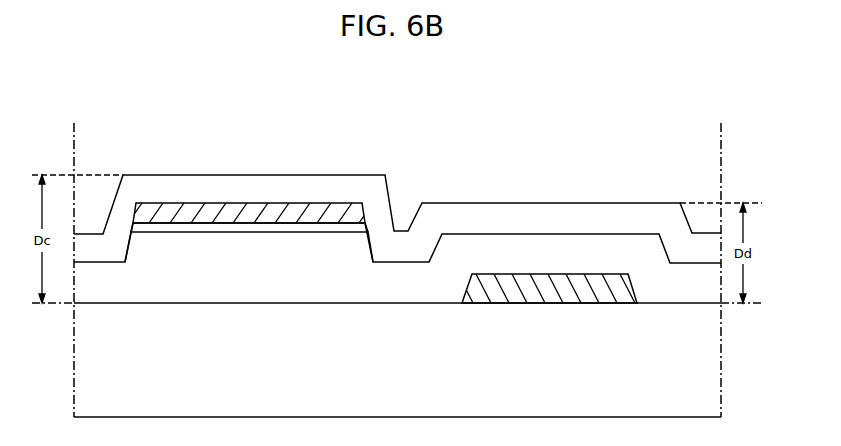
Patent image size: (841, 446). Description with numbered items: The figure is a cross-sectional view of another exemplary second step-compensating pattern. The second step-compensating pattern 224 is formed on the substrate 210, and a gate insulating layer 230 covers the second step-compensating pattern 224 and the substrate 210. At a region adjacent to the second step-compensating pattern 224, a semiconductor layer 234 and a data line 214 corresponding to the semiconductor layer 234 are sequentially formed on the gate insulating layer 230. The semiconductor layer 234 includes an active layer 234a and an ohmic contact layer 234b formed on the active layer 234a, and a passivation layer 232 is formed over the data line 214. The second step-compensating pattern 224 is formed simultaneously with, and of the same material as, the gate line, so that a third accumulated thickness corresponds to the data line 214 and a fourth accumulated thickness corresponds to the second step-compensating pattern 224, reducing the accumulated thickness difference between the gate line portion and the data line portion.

The substrate 210 is at (405, 397).
The data line 214 is at (208, 210).
The second step-compensating pattern 224 is at (557, 293).
The gate insulating layer 230 is at (405, 288).
The passivation layer 232 is at (298, 185).
The semiconductor layer 234 is at (249, 306).
The active layer 234a is at (173, 253).
The ohmic contact layer 234b is at (214, 227).